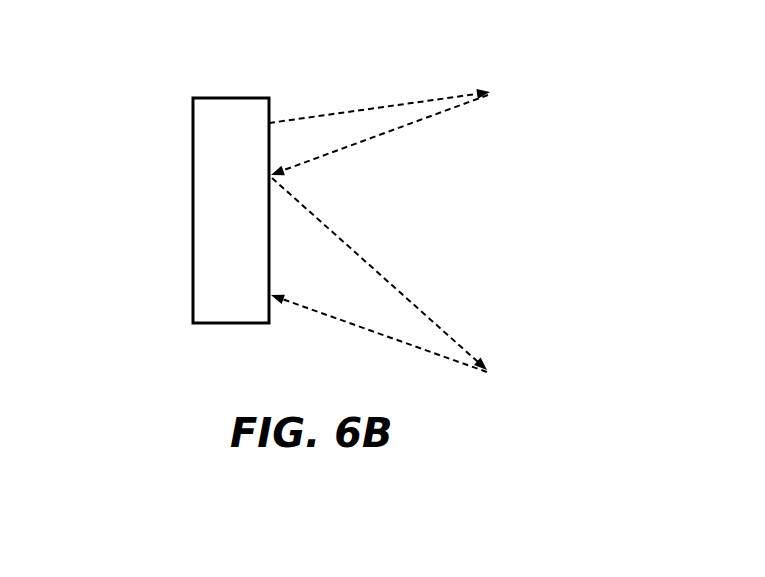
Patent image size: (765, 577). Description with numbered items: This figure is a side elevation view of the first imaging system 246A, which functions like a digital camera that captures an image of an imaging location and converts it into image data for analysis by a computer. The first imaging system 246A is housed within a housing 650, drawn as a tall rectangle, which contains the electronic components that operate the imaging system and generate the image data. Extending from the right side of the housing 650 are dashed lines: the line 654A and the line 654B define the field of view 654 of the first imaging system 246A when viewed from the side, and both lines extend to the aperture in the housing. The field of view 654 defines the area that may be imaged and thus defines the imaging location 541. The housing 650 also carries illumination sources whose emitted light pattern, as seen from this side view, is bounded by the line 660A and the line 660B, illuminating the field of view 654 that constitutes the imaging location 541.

The first imaging system 246A is at (187, 183).
The housing 650 is at (193, 193).
The line 660A is at (397, 103).
The line 654A is at (367, 142).
The line 660B is at (427, 313).
The line 654B is at (363, 330).
The field of view 654 is at (472, 200).
The imaging location 541 is at (497, 226).